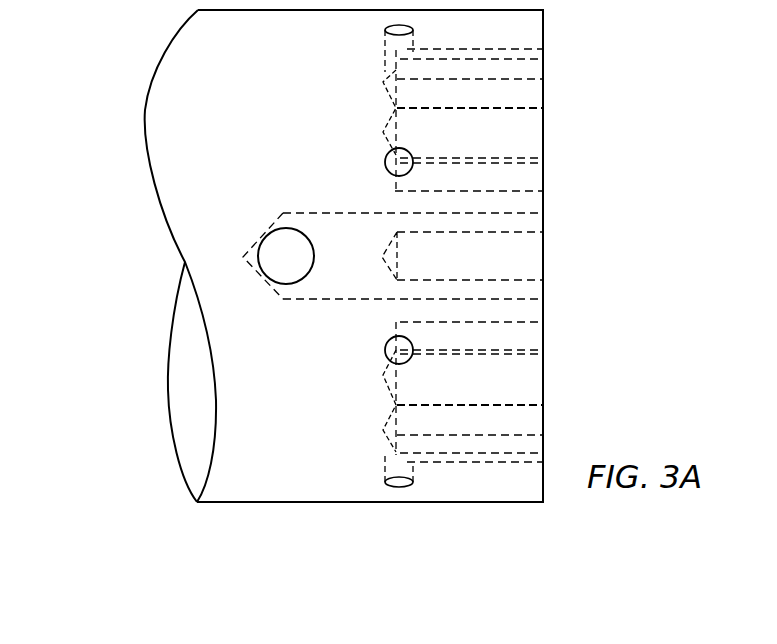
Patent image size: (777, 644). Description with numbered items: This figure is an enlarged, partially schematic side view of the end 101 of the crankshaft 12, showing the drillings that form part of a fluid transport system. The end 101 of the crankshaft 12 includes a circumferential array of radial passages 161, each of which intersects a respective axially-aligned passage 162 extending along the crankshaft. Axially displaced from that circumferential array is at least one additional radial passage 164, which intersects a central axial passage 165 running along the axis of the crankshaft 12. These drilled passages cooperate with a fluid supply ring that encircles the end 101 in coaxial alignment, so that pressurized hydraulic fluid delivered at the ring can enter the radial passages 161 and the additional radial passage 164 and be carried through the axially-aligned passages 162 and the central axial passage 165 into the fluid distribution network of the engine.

The end of the crankshaft 101 is at (300, 493).
The crankshaft 12 is at (198, 467).
The radial passages 161 is at (400, 481).
The axially-aligned passage 162 is at (500, 423).
The additional radial passage 164 is at (277, 252).
The central axial passage 165 is at (483, 251).